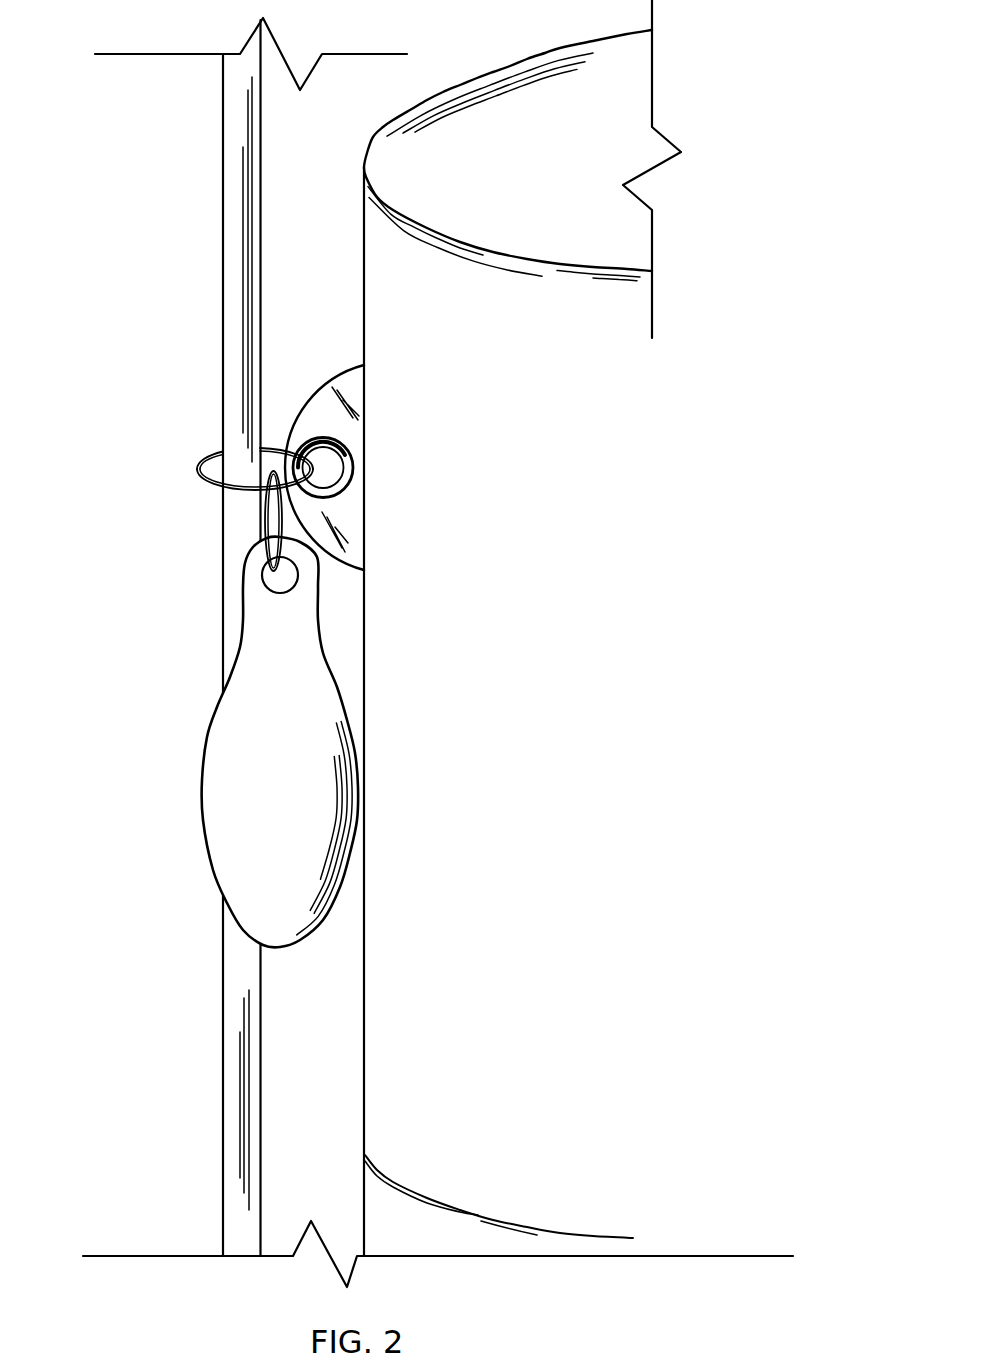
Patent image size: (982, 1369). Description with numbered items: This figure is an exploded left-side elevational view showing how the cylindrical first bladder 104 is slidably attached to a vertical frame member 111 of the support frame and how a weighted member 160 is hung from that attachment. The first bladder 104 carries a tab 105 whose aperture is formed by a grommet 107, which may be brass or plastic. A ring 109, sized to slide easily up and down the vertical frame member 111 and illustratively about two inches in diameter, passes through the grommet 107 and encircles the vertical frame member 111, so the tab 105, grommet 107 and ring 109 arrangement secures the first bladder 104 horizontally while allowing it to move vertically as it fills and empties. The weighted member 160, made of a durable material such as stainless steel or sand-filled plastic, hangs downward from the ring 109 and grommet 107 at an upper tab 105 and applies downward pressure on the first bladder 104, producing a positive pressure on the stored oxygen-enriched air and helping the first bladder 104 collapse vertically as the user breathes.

The first bladder 104 is at (363, 245).
The tab 105 is at (293, 420).
The grommet 107 is at (315, 437).
The ring 109 is at (198, 473).
The vertical frame member 111 is at (223, 218).
The weighted member 160 is at (205, 850).